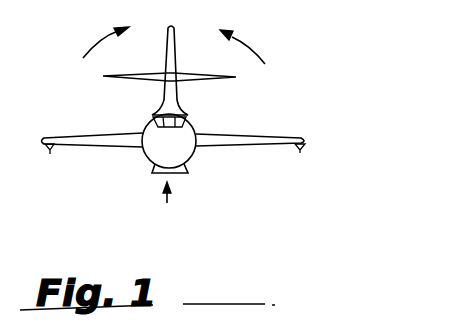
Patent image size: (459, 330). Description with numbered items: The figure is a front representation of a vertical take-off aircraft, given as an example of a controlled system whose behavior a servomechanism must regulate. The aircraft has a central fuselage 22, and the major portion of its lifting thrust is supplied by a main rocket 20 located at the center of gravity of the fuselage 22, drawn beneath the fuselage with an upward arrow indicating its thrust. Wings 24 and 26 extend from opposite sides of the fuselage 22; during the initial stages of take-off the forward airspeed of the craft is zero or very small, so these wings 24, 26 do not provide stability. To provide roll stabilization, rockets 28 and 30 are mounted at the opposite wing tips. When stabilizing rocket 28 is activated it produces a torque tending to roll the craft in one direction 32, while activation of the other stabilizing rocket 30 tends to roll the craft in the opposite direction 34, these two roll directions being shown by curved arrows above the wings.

The main rocket 20 is at (182, 173).
The fuselage 22 is at (189, 117).
The wing 24 is at (86, 147).
The wing 26 is at (232, 147).
The stabilizing rocket 28 is at (47, 153).
The stabilizing rocket 30 is at (308, 148).
The roll direction 32 is at (112, 30).
The opposite roll direction 34 is at (253, 45).